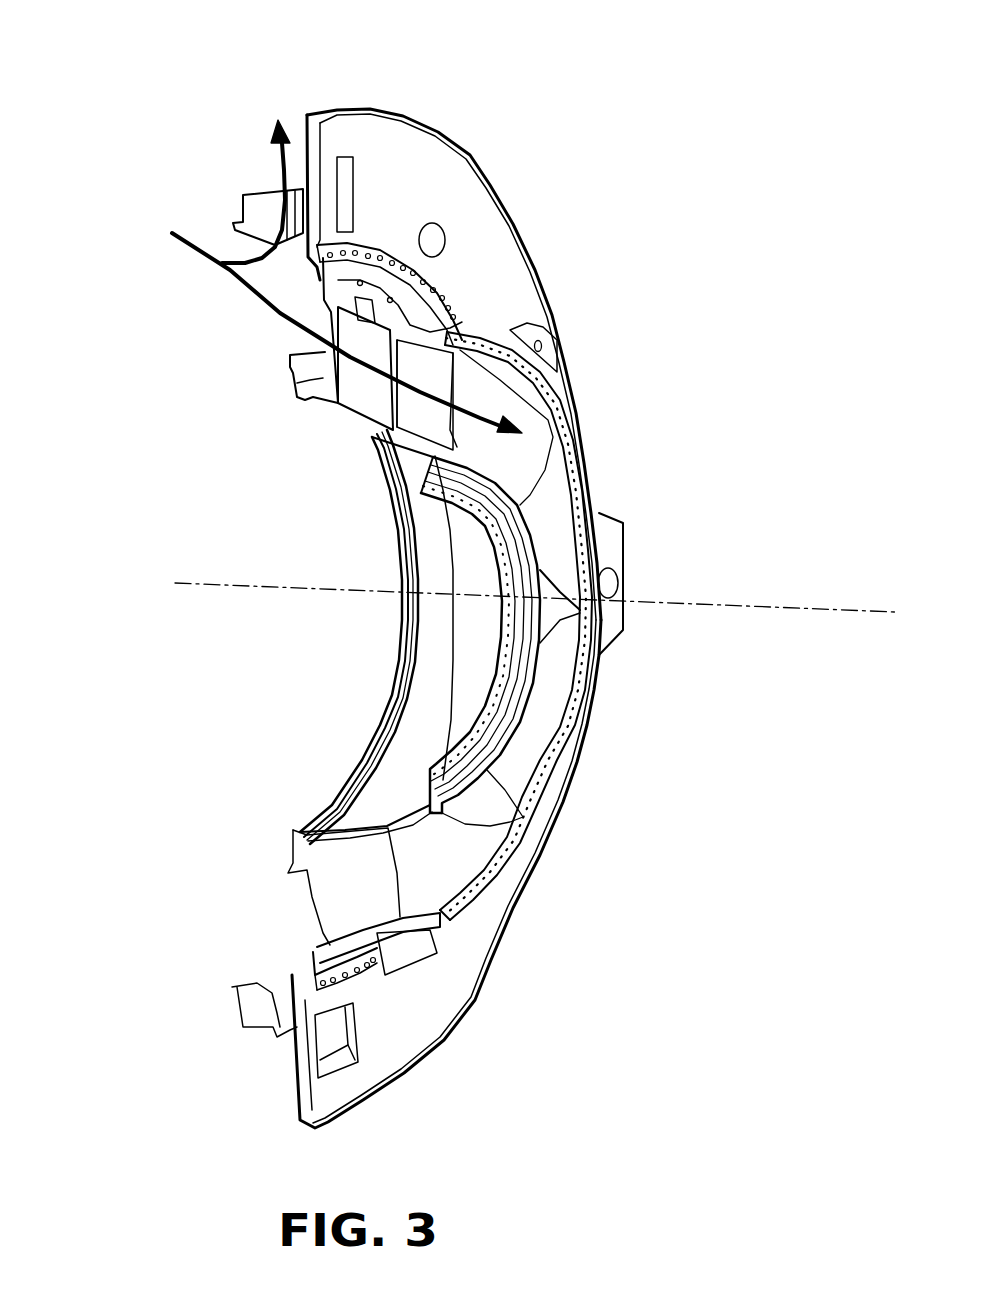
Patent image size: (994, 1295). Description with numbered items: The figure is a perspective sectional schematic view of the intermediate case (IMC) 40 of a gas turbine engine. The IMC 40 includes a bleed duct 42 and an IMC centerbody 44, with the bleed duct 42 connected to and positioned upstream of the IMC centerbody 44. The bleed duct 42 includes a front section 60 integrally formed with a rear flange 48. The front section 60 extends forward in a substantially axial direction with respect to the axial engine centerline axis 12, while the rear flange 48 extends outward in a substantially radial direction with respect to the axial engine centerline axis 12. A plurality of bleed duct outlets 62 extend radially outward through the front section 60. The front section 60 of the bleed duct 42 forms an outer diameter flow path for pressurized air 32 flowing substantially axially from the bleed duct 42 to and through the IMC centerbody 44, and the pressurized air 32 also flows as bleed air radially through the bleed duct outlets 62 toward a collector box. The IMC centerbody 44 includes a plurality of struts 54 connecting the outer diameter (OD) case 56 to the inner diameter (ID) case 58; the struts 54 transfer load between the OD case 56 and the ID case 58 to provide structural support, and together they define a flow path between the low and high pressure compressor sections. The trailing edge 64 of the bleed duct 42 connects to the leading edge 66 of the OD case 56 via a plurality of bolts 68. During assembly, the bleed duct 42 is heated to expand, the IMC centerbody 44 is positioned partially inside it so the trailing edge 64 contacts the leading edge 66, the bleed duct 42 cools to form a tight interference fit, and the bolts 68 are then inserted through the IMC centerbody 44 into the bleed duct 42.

The axial engine centerline axis 12 is at (535, 557).
The pressurized air 32 is at (283, 333).
The intermediate case (IMC) 40 is at (693, 112).
The bleed duct 42 is at (430, 874).
The IMC centerbody 44 is at (497, 670).
The rear flange 48 is at (454, 318).
The struts 54 is at (548, 621).
The outer diameter (OD) case 56 is at (642, 538).
The inner diameter (ID) case 58 is at (536, 635).
The front section 60 is at (232, 192).
The bleed duct outlets 62 is at (303, 190).
The trailing edge 64 is at (309, 354).
The leading edge 66 is at (261, 356).
The bolts 68 is at (435, 241).